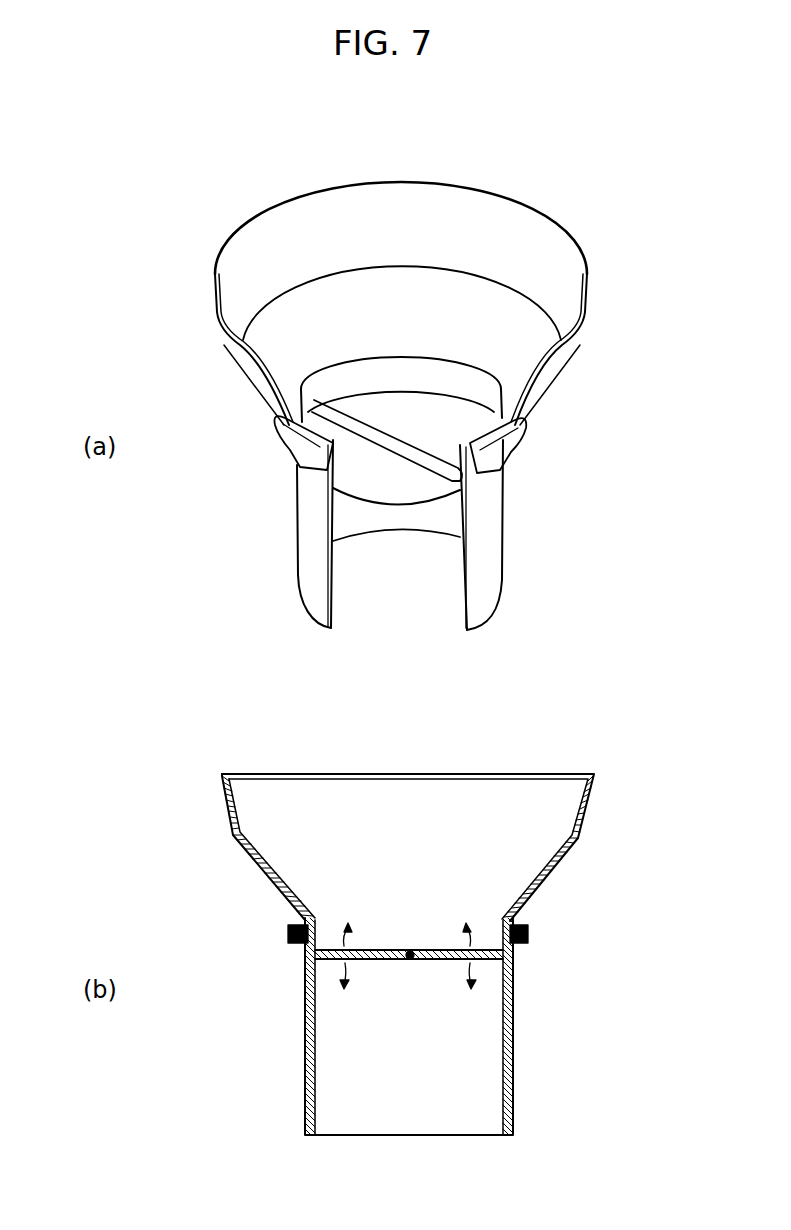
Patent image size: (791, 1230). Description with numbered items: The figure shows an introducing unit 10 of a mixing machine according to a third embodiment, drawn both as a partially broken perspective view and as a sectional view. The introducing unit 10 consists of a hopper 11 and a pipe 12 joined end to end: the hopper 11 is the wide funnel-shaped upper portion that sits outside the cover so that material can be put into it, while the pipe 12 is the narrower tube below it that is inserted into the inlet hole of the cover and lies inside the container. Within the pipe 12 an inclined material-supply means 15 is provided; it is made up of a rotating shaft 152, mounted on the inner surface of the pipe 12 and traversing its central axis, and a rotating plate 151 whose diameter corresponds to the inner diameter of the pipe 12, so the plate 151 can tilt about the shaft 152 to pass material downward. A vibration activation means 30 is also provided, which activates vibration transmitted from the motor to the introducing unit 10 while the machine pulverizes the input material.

The introducing unit 10 is at (387, 658).
The hopper 11 is at (577, 360).
The pipe 12 is at (505, 541).
The inclined material-supply means 15 is at (387, 462).
The rotating plate 151 is at (412, 410).
The rotating shaft 152 is at (375, 425).
The vibration activation means 30 is at (400, 444).